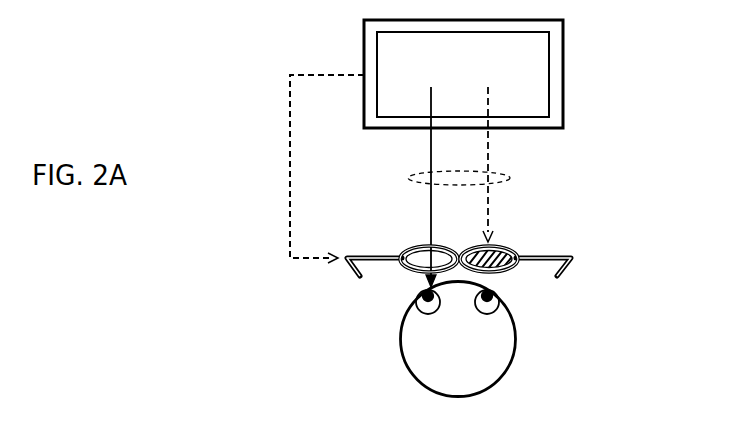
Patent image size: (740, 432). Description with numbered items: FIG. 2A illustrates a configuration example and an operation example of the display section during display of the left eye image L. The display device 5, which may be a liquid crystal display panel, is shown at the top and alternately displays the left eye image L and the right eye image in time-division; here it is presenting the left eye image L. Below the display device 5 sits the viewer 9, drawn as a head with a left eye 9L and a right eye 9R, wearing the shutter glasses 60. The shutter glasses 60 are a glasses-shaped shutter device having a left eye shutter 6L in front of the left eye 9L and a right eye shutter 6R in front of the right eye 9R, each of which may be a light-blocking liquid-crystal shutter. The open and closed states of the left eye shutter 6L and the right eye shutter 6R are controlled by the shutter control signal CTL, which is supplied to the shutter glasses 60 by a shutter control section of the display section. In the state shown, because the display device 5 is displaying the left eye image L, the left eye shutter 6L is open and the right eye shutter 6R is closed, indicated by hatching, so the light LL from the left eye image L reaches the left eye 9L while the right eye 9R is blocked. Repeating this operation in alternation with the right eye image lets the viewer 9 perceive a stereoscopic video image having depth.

The display device 5 is at (549, 73).
The left eye image L is at (459, 173).
The shutter control signal CTL is at (290, 168).
The left-eye image light LL is at (512, 174).
The shutter glasses 60 is at (508, 244).
The left eye shutter 6L is at (408, 247).
The right eye shutter 6R is at (510, 247).
The viewer 9 is at (473, 339).
The left eye 9L is at (406, 297).
The right eye 9R is at (510, 297).